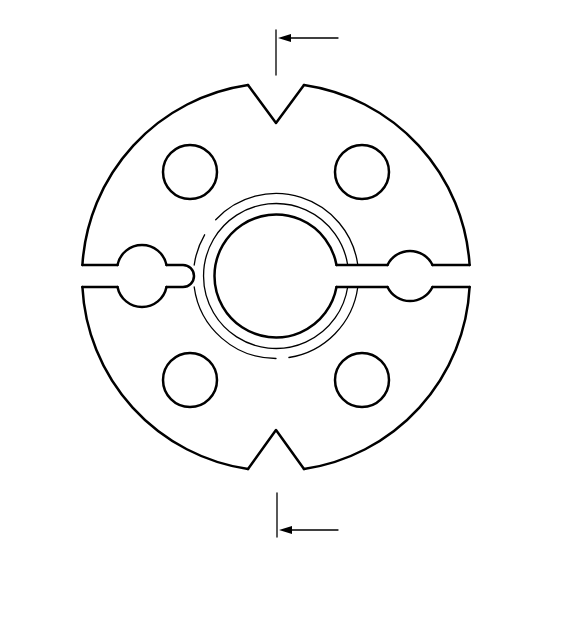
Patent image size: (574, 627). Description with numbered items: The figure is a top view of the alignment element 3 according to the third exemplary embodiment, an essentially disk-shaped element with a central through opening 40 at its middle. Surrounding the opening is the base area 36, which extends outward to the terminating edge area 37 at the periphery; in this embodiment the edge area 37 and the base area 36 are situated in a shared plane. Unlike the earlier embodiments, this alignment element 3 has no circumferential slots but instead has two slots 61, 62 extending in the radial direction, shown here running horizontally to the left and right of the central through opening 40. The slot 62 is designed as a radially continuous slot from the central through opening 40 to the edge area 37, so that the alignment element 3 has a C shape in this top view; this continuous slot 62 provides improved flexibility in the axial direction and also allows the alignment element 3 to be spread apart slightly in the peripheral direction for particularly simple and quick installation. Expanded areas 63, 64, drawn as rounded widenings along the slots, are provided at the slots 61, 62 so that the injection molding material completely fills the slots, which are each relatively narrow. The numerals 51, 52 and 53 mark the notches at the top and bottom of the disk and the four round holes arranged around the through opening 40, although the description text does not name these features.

The alignment element 3 is at (98, 88).
The base area 36 is at (395, 213).
The edge area 37 is at (347, 103).
The central through opening 40 is at (271, 337).
The upper notch 51 is at (261, 100).
The lower notch 52 is at (261, 452).
The holes 53 is at (362, 168).
The slot 61 is at (95, 277).
The slot 62 is at (367, 278).
The expanded area 63 is at (411, 301).
The expanded area 64 is at (157, 300).